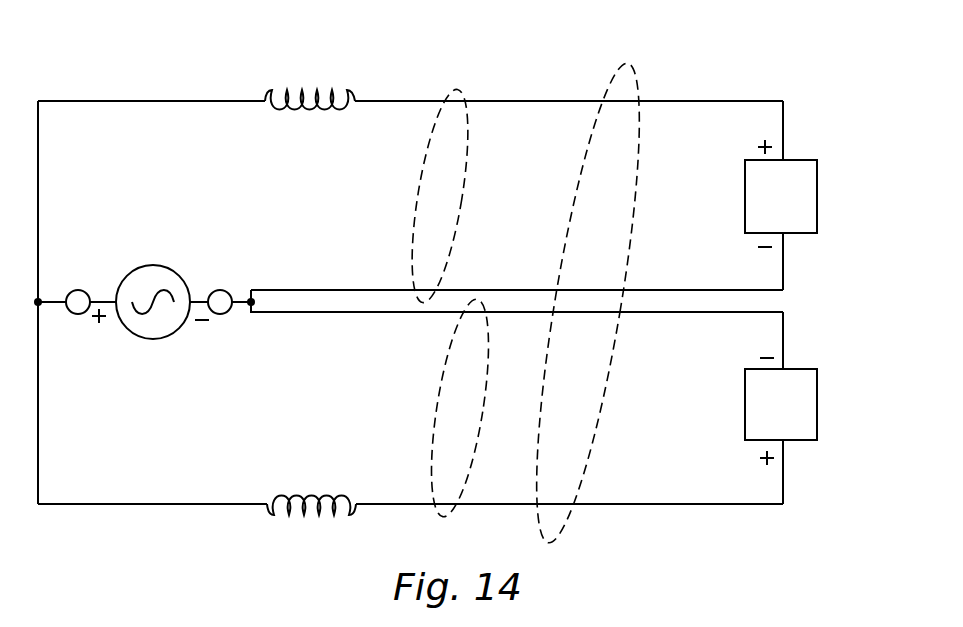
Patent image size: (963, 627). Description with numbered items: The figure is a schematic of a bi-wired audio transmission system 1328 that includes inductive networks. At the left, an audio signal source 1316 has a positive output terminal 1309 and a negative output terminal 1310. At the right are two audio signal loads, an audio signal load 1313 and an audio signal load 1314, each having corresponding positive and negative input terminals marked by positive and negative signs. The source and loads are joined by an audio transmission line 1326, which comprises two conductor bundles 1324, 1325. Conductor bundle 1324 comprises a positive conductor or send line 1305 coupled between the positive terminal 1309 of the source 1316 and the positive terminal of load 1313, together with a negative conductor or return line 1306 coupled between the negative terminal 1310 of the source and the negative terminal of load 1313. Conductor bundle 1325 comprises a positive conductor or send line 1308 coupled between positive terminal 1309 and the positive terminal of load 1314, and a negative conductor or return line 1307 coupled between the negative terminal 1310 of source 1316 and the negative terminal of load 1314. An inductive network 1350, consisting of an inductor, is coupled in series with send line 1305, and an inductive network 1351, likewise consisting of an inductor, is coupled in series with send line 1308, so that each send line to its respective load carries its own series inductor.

The positive conductor or send line 1305 is at (663, 101).
The negative conductor or return line 1306 is at (522, 289).
The negative conductor or return line 1307 is at (640, 313).
The positive conductor or send line 1308 is at (677, 502).
The positive output terminal 1309 is at (75, 290).
The negative output terminal 1310 is at (222, 290).
The audio signal load 1313 is at (795, 235).
The audio signal load 1314 is at (795, 442).
The audio signal source 1316 is at (148, 340).
The conductor bundle 1324 is at (428, 137).
The conductor bundle 1325 is at (442, 385).
The audio transmission line 1326 is at (585, 150).
The bi-wired audio transmission system 1328 is at (799, 126).
The inductive network 1350 is at (307, 88).
The inductive network 1351 is at (304, 517).